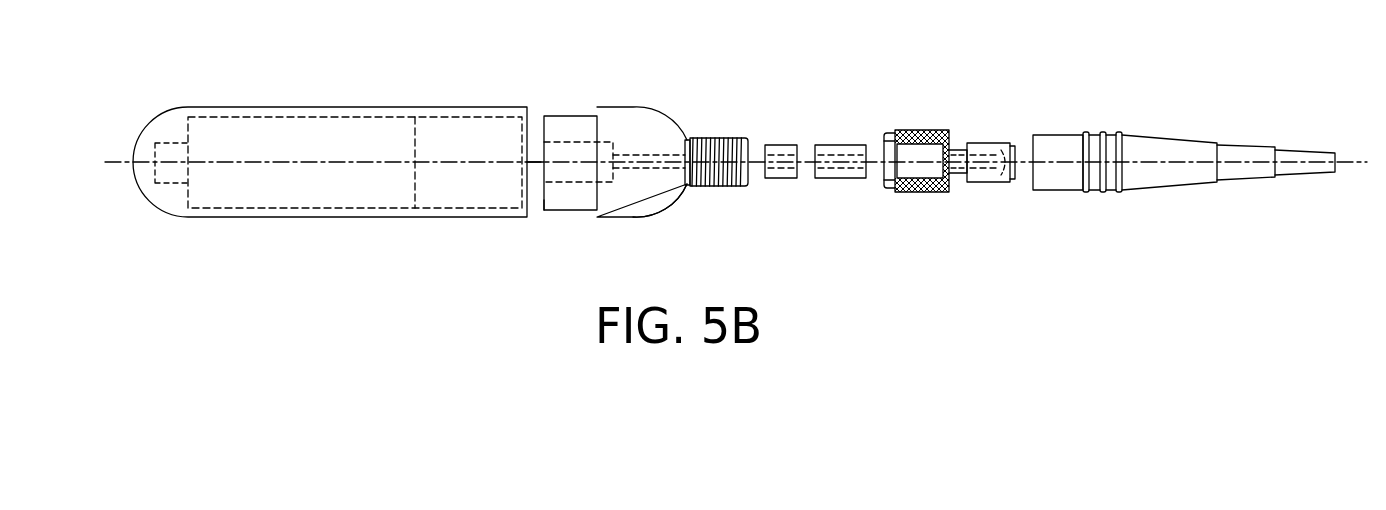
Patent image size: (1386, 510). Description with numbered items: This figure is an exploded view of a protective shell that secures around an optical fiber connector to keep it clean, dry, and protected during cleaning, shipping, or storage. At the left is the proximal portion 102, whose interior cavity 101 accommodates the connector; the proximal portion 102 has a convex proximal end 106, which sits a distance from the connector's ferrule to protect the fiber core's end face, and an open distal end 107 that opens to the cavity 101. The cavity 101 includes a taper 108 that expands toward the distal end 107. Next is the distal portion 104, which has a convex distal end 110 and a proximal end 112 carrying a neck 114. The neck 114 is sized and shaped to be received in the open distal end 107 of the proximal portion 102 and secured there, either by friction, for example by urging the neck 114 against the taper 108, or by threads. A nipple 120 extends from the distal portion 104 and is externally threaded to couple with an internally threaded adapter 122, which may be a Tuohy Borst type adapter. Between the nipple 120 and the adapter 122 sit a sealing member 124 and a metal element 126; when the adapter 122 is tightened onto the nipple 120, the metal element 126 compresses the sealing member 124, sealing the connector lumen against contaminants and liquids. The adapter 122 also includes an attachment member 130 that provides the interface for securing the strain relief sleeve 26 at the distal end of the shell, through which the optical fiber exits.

The strain relief sleeve 26 is at (1155, 135).
The cavity 101 is at (273, 142).
The proximal portion 102 is at (170, 197).
The distal portion 104 is at (643, 122).
The convex proximal end 106 is at (133, 155).
The distal end 107 is at (533, 110).
The taper 108 is at (473, 117).
The convex distal end 110 is at (670, 203).
The proximal end 112 is at (544, 210).
The neck 114 is at (572, 122).
The nipple 120 is at (702, 140).
The adapter 122 is at (922, 130).
The sealing member 124 is at (780, 145).
The metal element 126 is at (841, 145).
The attachment member 130 is at (985, 142).